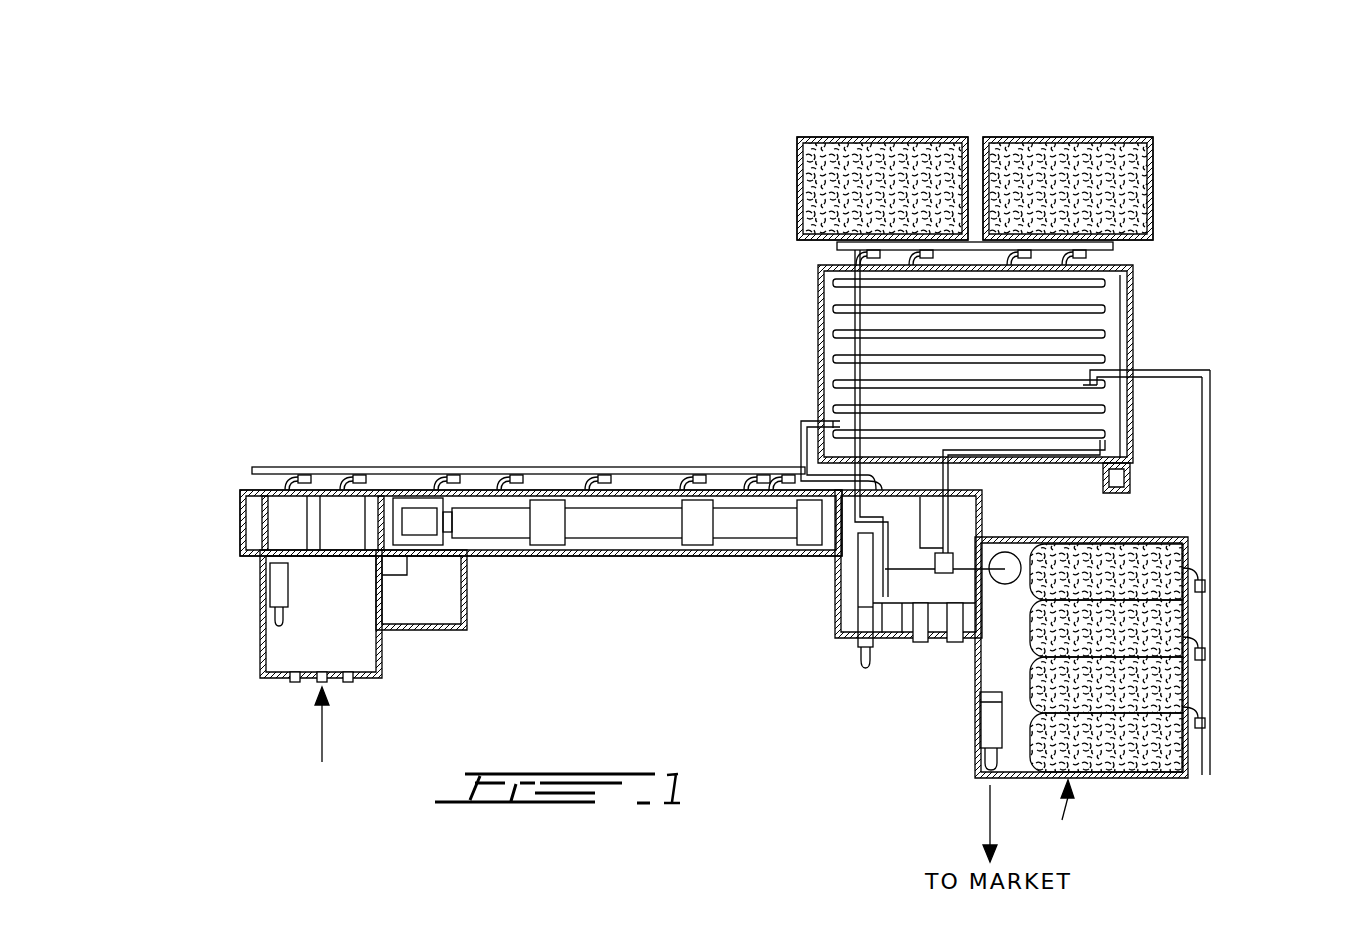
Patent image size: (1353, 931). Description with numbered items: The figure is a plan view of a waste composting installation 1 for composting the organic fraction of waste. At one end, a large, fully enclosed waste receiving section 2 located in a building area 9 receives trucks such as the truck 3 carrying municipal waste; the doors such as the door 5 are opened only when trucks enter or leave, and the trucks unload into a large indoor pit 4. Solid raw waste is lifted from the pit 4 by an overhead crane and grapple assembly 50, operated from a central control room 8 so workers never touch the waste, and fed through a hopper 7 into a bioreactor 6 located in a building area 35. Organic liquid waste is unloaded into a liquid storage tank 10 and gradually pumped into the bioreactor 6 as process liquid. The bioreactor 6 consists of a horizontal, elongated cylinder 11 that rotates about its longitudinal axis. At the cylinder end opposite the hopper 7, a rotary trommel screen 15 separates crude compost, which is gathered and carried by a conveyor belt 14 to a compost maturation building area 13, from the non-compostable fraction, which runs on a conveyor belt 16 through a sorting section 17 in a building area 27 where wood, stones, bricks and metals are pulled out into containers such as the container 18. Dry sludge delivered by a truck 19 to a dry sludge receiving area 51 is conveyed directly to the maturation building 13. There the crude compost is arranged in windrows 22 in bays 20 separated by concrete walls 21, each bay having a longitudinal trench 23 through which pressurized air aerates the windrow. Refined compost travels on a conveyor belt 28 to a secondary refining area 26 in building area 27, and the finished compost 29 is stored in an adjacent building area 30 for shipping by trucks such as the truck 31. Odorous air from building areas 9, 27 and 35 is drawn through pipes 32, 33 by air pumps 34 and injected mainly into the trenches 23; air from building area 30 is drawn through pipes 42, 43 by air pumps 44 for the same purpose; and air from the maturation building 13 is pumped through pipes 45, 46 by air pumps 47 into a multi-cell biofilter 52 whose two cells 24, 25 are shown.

The waste composting installation 1 is at (413, 225).
The waste receiving section 2 is at (262, 656).
The truck 3 is at (277, 590).
The pit 4 is at (338, 507).
The door 5 is at (280, 680).
The bioreactor 6 is at (632, 495).
The hopper 7 is at (427, 515).
The central control room 8 is at (397, 567).
The building area 9 is at (825, 492).
The liquid storage tank 10 is at (373, 507).
The horizontal elongated cylinder 11 is at (608, 540).
The compost maturation building area 13 is at (1145, 325).
The conveyor belt 14 is at (848, 300).
The rotary trommel screen 15 is at (800, 524).
The conveyor belt 16 is at (878, 552).
The sorting section 17 is at (893, 628).
The container 18 is at (955, 630).
The truck 19 is at (870, 668).
The bay 20 is at (1100, 305).
The concrete wall 21 is at (1050, 374).
The windrow 22 is at (1093, 353).
The longitudinal trench 23 is at (1083, 422).
The biofilter cell 24 is at (797, 168).
The biofilter cell 25 is at (1153, 160).
The secondary refining area 26 is at (950, 562).
The building area 27 is at (860, 640).
The conveyor belt 28 is at (1100, 448).
The compost 29 is at (1110, 772).
The building area 30 is at (1028, 821).
The truck 31 is at (990, 720).
The pipe 32 is at (578, 472).
The pipe 33 is at (345, 490).
The air pump 34 is at (455, 477).
The building area 35 is at (573, 565).
The pipe 42 is at (1205, 645).
The pipe 43 is at (1213, 690).
The air pump 44 is at (1210, 725).
The pipe 45 is at (1010, 247).
The pipe 46 is at (840, 247).
The air pump 47 is at (1087, 253).
The overhead crane and grapple assembly 50 is at (313, 507).
The dry sludge receiving area 51 is at (825, 640).
The biofilter 52 is at (1028, 112).